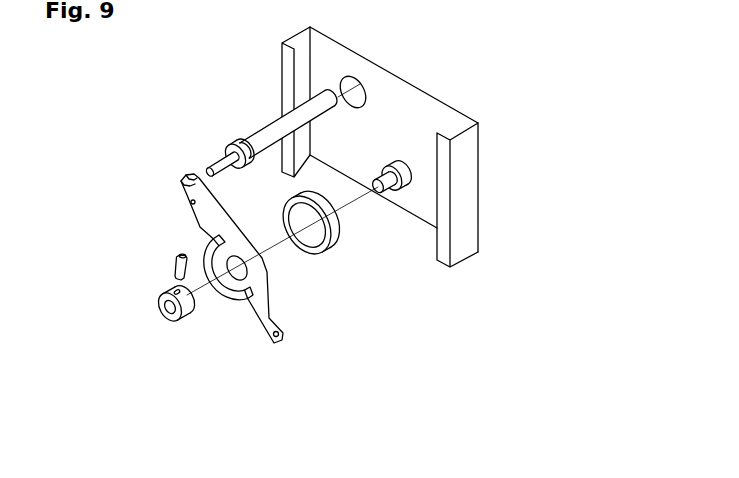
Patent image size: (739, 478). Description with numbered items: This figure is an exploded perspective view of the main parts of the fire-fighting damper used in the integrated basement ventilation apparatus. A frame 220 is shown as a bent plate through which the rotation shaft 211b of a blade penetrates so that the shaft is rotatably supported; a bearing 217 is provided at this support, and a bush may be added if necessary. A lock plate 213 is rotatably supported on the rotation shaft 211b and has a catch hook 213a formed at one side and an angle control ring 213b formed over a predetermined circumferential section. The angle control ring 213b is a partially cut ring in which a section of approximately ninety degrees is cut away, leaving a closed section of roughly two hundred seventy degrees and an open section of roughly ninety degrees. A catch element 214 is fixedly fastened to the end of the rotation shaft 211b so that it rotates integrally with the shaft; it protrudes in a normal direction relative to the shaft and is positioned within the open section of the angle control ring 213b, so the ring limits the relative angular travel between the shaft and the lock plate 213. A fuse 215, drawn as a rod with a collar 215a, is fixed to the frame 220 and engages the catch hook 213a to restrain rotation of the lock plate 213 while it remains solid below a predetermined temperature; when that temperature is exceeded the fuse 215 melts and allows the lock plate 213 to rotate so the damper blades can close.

The frame 220 is at (468, 160).
The fuse 215 is at (235, 127).
The shaft collar 215a is at (273, 137).
The bearing 217 is at (335, 247).
The rotation shaft 211b is at (388, 190).
The catch element 214 is at (173, 265).
The lock plate 213 is at (213, 273).
The catch hook 213a is at (187, 180).
The angle control ring 213b is at (226, 305).